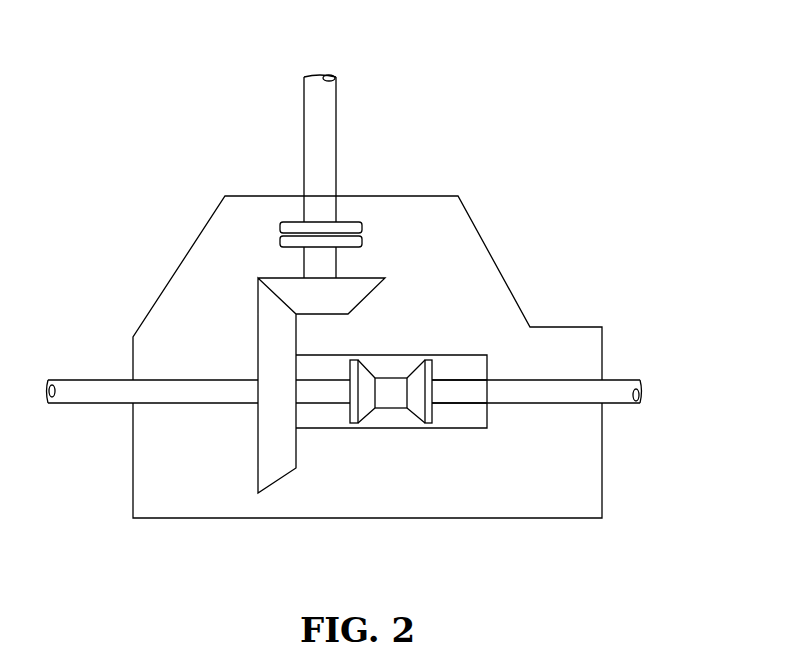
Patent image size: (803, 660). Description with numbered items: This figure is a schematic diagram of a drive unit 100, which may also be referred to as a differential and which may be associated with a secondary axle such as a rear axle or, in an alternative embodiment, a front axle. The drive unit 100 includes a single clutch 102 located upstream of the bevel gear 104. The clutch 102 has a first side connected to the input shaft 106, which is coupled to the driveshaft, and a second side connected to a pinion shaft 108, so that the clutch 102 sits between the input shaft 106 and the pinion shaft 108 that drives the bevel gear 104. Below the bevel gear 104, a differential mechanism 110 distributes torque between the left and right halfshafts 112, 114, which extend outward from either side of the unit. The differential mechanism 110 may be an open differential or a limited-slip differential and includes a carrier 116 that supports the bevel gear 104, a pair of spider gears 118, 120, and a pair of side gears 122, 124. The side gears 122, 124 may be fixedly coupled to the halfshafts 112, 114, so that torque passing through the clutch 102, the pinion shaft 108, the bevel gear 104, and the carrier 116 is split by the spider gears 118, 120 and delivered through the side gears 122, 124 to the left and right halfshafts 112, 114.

The drive unit 100 is at (563, 96).
The clutch 102 is at (365, 211).
The bevel gear 104 is at (258, 337).
The input shaft 106 is at (304, 138).
The pinion shaft 108 is at (333, 263).
The differential mechanism 110 is at (435, 419).
The left halfshaft 112 is at (115, 387).
The right halfshaft 114 is at (615, 383).
The carrier 116 is at (325, 428).
The spider gear 118 is at (393, 362).
The spider gear 120 is at (421, 419).
The side gear 122 is at (368, 405).
The side gear 124 is at (422, 438).